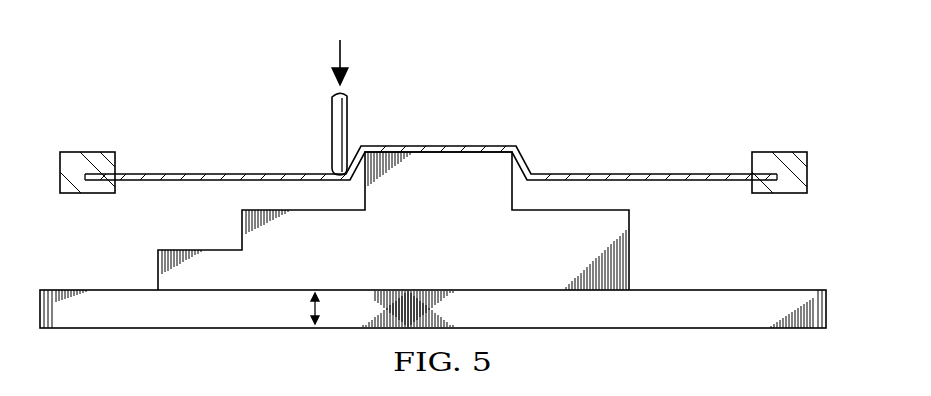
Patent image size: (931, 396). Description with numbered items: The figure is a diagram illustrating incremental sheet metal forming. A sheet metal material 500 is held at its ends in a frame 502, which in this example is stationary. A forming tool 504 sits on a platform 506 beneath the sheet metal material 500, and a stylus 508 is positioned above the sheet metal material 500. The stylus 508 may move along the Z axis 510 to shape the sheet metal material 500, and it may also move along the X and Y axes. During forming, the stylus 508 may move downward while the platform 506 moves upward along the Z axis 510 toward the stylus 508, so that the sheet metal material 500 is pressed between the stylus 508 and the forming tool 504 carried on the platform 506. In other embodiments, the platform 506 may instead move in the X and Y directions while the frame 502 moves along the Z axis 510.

The sheet metal material 500 is at (578, 172).
The frame 502 is at (82, 152).
The forming tool 504 is at (630, 232).
The platform 506 is at (586, 328).
The stylus 508 is at (332, 133).
The Z axis 510 is at (312, 310).